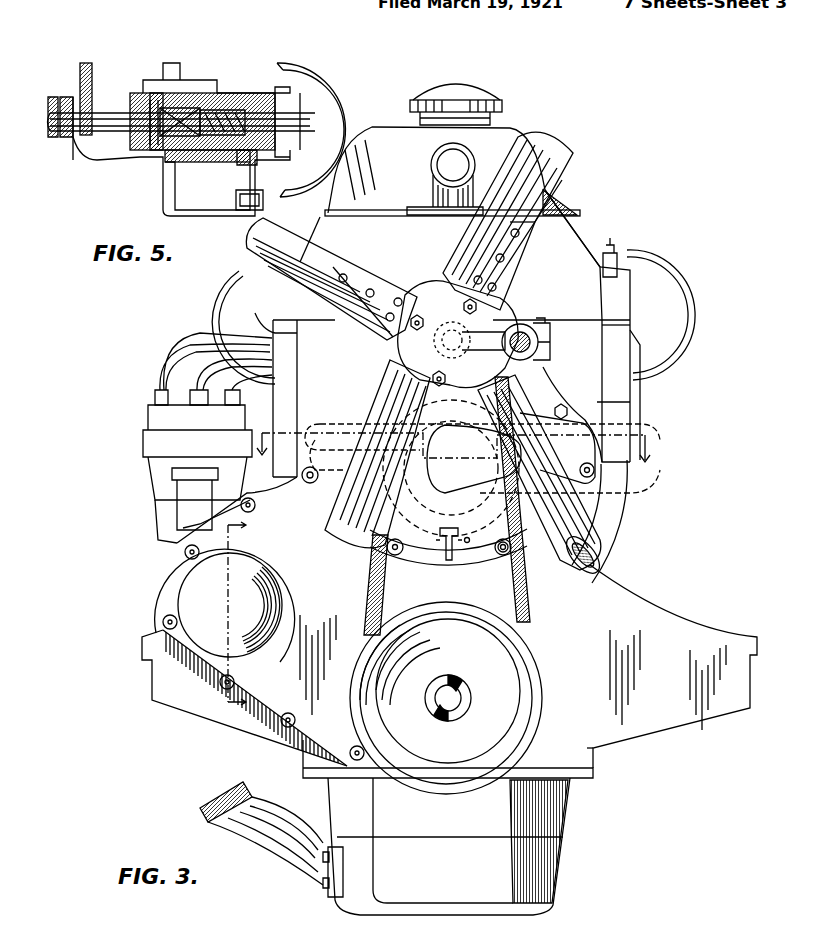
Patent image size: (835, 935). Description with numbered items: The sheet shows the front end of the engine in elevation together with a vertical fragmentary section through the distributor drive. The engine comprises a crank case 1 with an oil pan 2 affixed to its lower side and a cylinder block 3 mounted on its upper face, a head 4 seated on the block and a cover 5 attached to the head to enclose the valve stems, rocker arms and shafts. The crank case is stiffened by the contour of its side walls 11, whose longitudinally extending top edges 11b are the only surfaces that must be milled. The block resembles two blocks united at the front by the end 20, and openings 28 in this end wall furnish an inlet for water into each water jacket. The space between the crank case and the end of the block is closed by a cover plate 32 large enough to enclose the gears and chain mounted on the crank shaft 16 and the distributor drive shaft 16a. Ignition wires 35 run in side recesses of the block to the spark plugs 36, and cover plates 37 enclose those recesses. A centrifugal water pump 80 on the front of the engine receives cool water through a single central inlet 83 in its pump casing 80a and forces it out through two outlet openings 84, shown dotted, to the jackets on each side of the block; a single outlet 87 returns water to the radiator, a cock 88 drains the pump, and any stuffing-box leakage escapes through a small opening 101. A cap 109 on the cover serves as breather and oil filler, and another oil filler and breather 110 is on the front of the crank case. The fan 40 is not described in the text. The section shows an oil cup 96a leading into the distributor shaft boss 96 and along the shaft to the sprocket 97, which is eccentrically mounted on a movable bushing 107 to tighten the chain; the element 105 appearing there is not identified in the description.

In FIG. 5, the crank case 1 is at (127, 160).
In FIG. 3, the crank case 1 is at (612, 540).
In FIG. 3, the oil pan 2 is at (568, 835).
In FIG. 3, the cylinder block 3 is at (598, 403).
In FIG. 3, the head 4 is at (582, 243).
In FIG. 3, the cover 5 is at (515, 135).
In FIG. 3, the side walls 11 is at (625, 512).
In FIG. 3, the top edges 11b is at (610, 322).
In FIG. 3, the main crank shaft 16 is at (458, 698).
In FIG. 5, the distributor drive shaft 16a is at (312, 117).
In FIG. 3, the end of block 20 is at (422, 466).
In FIG. 3, the openings 28 is at (316, 420).
In FIG. 5, the cover plate 32 is at (300, 78).
In FIG. 3, the cover plate 32 is at (565, 370).
In FIG. 3, the ignition wires 35 is at (218, 290).
In FIG. 3, the spark plugs 36 is at (623, 250).
In FIG. 3, the cover plates 37 is at (262, 325).
In FIG. 3, the fan 40 is at (425, 355).
In FIG. 3, the water pump 80 is at (449, 564).
In FIG. 3, the pump casing 80a is at (503, 556).
In FIG. 3, the inlet 83 is at (506, 383).
In FIG. 3, the outlet openings 84 is at (335, 470).
In FIG. 3, the outlet 87 is at (430, 165).
In FIG. 3, the cock 88 is at (450, 562).
In FIG. 5, the distributor shaft boss 96 is at (215, 90).
In FIG. 5, the oil cup 96a is at (185, 82).
In FIG. 5, the sprocket 97 is at (240, 93).
In FIG. 3, the small opening 101 is at (468, 545).
In FIG. 5, the plug 105 is at (257, 158).
In FIG. 5, the movable bushing 107 is at (135, 82).
In FIG. 3, the cap 109 is at (470, 90).
In FIG. 3, the oil filler and breather 110 is at (175, 510).